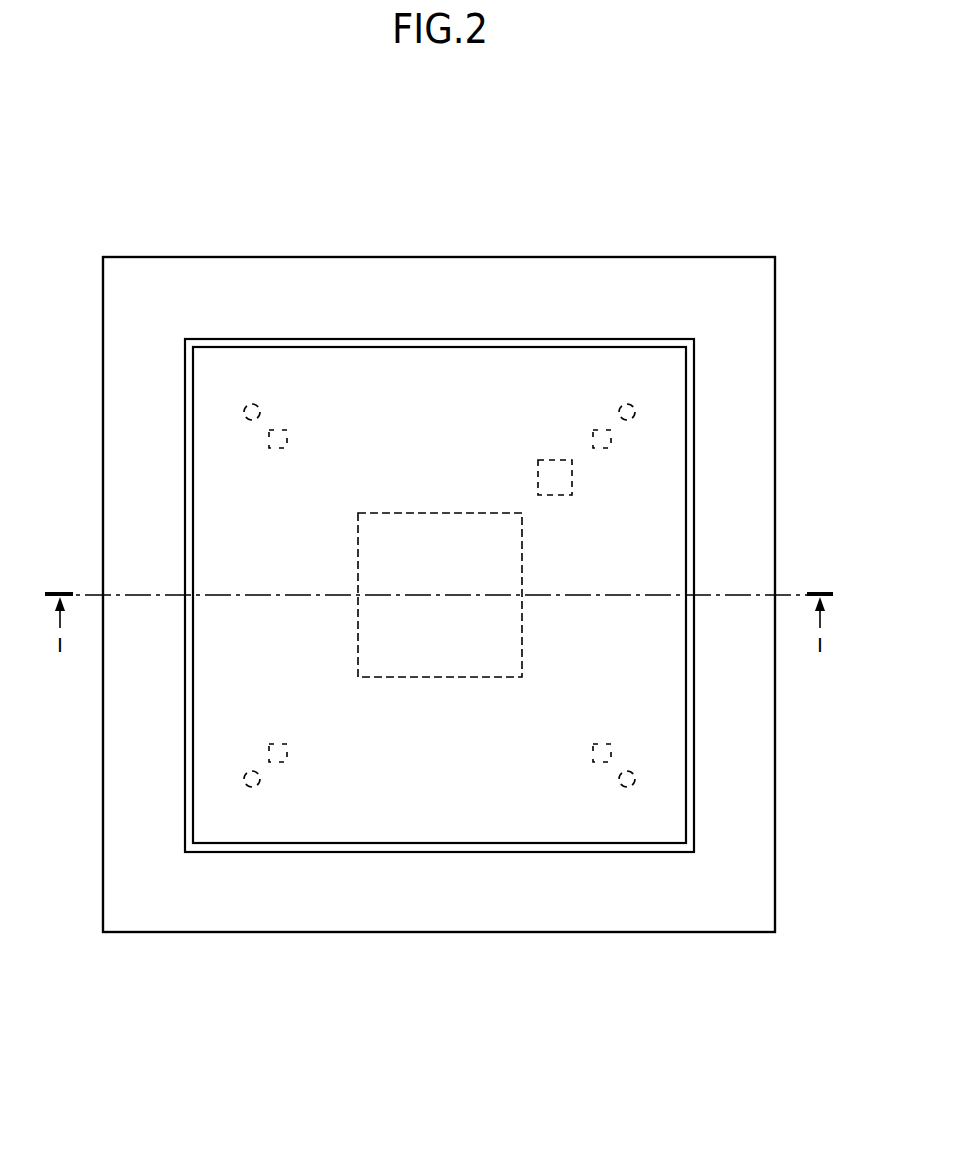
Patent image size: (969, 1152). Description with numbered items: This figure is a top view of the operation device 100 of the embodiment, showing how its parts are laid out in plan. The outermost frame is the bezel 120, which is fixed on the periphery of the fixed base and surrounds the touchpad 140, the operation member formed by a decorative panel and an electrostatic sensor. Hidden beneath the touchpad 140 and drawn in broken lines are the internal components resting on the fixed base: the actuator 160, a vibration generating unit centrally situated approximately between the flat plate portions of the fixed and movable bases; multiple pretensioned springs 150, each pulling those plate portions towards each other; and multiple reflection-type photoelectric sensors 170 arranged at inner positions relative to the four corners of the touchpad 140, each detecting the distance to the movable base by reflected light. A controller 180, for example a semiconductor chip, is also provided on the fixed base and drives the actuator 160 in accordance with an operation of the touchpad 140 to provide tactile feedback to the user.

The operation device 100 is at (822, 190).
The bezel 120 is at (742, 549).
The touchpad 140 is at (682, 682).
The pretensioned springs 150 is at (252, 404).
The actuator 160 is at (440, 677).
The reflection-type photoelectric sensors 170 is at (278, 449).
The controller 180 is at (556, 495).